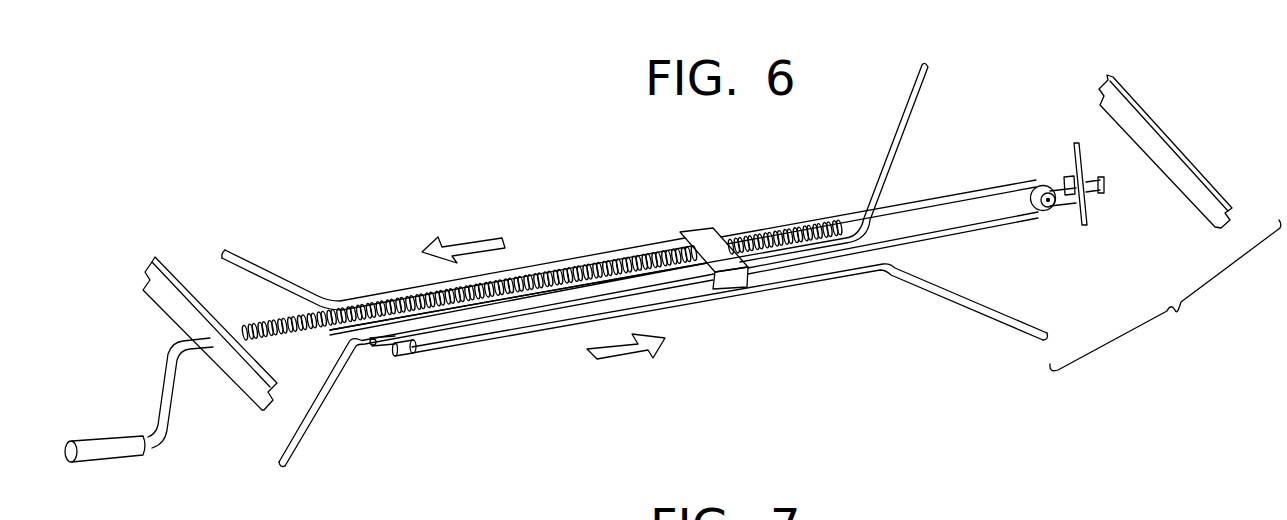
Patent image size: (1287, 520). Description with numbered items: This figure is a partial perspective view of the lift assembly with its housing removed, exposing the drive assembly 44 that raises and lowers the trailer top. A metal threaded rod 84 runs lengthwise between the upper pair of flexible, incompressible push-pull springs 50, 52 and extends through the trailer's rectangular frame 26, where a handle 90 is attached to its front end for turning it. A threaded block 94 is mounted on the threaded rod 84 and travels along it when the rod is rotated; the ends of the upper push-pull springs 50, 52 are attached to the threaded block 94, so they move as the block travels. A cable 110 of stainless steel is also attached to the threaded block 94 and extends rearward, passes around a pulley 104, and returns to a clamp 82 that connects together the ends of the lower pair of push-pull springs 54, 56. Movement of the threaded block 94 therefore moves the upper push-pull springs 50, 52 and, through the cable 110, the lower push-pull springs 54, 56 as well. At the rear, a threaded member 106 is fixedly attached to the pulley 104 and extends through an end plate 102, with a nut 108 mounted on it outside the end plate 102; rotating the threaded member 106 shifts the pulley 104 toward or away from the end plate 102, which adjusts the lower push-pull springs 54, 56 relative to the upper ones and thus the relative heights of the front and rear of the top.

The frame 26 is at (236, 390).
The drive assembly 44 is at (797, 166).
The push-pull spring 50 is at (381, 290).
The push-pull spring 52 is at (518, 322).
The push-pull spring 54 is at (372, 349).
The push-pull spring 56 is at (719, 297).
The clamp 82 is at (415, 357).
The threaded rod 84 is at (573, 265).
The handle 90 is at (152, 448).
The threaded block 94 is at (698, 236).
The end plate 102 is at (1083, 227).
The pulley 104 is at (1050, 220).
The threaded member 106 is at (1073, 179).
The nut 108 is at (1104, 190).
The cable 110 is at (928, 203).